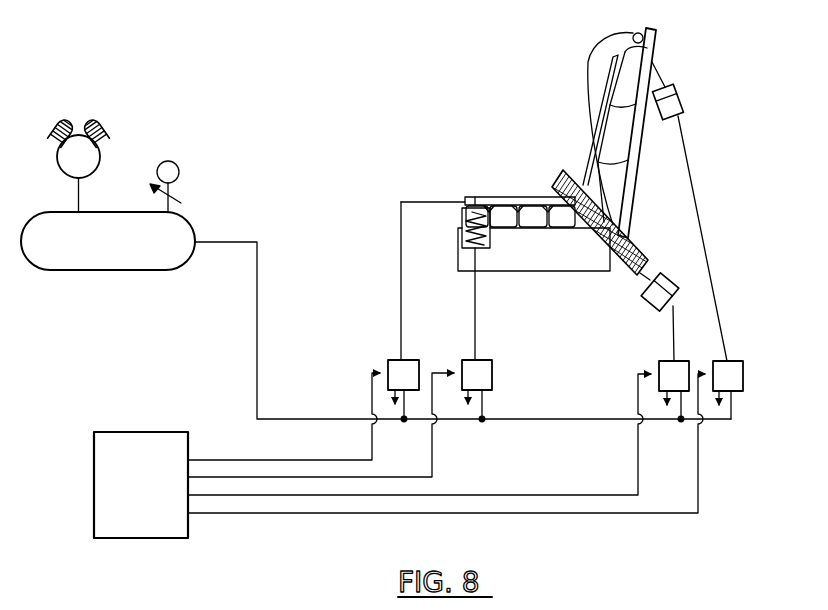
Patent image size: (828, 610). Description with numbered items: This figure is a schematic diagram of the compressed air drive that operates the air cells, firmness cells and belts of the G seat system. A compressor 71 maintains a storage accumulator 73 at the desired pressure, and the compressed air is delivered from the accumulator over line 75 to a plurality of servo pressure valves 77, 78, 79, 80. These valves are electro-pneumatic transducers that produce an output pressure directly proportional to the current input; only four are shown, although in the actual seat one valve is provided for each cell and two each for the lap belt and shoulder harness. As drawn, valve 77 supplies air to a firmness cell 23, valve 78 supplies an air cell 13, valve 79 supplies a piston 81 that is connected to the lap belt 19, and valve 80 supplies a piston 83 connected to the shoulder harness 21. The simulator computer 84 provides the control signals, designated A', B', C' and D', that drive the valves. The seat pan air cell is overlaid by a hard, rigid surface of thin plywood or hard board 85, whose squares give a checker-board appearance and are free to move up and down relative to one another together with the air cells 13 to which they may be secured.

The air cell 13 is at (462, 220).
The lap belt 19 is at (632, 233).
The shoulder harness 21 is at (660, 72).
The firmness cell 23 is at (492, 202).
The compressor 71 is at (113, 130).
The storage accumulator 73 is at (195, 228).
The line 75 is at (258, 338).
The servo pressure valve 77 is at (398, 370).
The servo pressure valve 78 is at (492, 368).
The servo pressure valve 79 is at (670, 362).
The servo pressure valve 80 is at (728, 368).
The piston 81 is at (655, 305).
The piston 83 is at (676, 113).
The simulator computer 84 is at (145, 432).
The hard board 85 is at (475, 200).